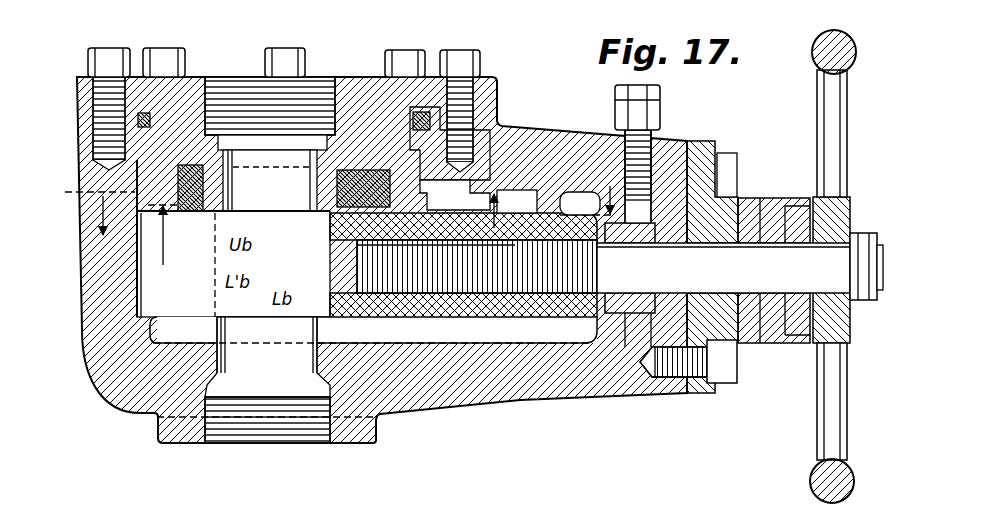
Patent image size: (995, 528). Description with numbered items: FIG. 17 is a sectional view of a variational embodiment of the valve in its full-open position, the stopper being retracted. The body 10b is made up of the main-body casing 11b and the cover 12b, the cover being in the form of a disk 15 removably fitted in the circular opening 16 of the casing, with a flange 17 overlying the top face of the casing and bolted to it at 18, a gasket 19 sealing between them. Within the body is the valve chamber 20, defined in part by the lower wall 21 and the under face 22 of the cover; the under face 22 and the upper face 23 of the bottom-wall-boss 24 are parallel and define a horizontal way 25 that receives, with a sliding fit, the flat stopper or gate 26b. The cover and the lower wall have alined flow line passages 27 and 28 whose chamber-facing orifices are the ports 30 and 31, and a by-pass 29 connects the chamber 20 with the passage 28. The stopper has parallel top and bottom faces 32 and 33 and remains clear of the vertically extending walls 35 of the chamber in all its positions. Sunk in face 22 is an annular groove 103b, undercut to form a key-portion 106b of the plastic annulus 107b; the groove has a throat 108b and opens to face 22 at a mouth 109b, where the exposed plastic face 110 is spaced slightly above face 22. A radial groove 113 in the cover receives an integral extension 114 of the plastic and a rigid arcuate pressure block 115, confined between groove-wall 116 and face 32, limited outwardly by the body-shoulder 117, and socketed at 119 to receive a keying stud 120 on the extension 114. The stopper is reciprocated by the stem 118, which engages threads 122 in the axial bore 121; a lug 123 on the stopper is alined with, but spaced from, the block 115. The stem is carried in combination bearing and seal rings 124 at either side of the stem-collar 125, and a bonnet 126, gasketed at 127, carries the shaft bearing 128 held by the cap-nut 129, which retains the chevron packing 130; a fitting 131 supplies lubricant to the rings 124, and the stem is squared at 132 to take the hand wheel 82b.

The body 10b is at (126, 407).
The main-body casing 11b is at (527, 131).
The cover 12b is at (199, 84).
The disk 15 is at (458, 148).
The circular opening 16 is at (449, 160).
The flange 17 is at (78, 77).
The bolts 18 is at (158, 52).
The gasket 19 is at (143, 116).
The valve chamber 20 is at (262, 296).
The lower wall 21 is at (500, 346).
The under face of cover 22 is at (330, 216).
The upper face of bottom-wall-boss 23 is at (178, 331).
The bottom-wall-boss 24 is at (378, 344).
The horizontal way 25 is at (148, 306).
The stopper 26b is at (455, 344).
The flow line passage 27 is at (316, 84).
The flow line passage 28 is at (250, 444).
The by-pass 29 is at (372, 346).
The port 30 is at (298, 212).
The port 31 is at (288, 331).
The top face of stopper 32 is at (544, 202).
The bottom face of stopper 33 is at (510, 320).
The vertically extending walls 35 is at (132, 293).
The hand wheel 82b is at (818, 88).
The annular groove 103b is at (230, 192).
The key-portion 106b is at (178, 170).
The plastic annulus 107b is at (196, 162).
The throat 108b is at (230, 176).
The mouth 109b is at (183, 213).
The exposed plastic face 110 is at (194, 213).
The radial groove 113 is at (413, 122).
The radial extension 114 is at (368, 170).
The pressure block 115 is at (463, 195).
The groove-wall 116 is at (388, 185).
The body-shoulder 117 is at (424, 188).
The stem 118 is at (583, 346).
The socket 119 is at (382, 185).
The keying stud 120 is at (359, 246).
The bore 121 is at (330, 262).
The threads 122 is at (557, 344).
The lug 123 is at (579, 192).
The combination bearing and seal rings 124 is at (620, 316).
The stem-collar 125 is at (645, 268).
The bonnet 126 is at (705, 148).
The gasket 127 is at (736, 178).
The shaft bearing 128 is at (736, 344).
The cap-nut 129 is at (812, 346).
The chevron packing 130 is at (752, 201).
The fitting 131 is at (655, 138).
The squared portion 132 is at (831, 243).